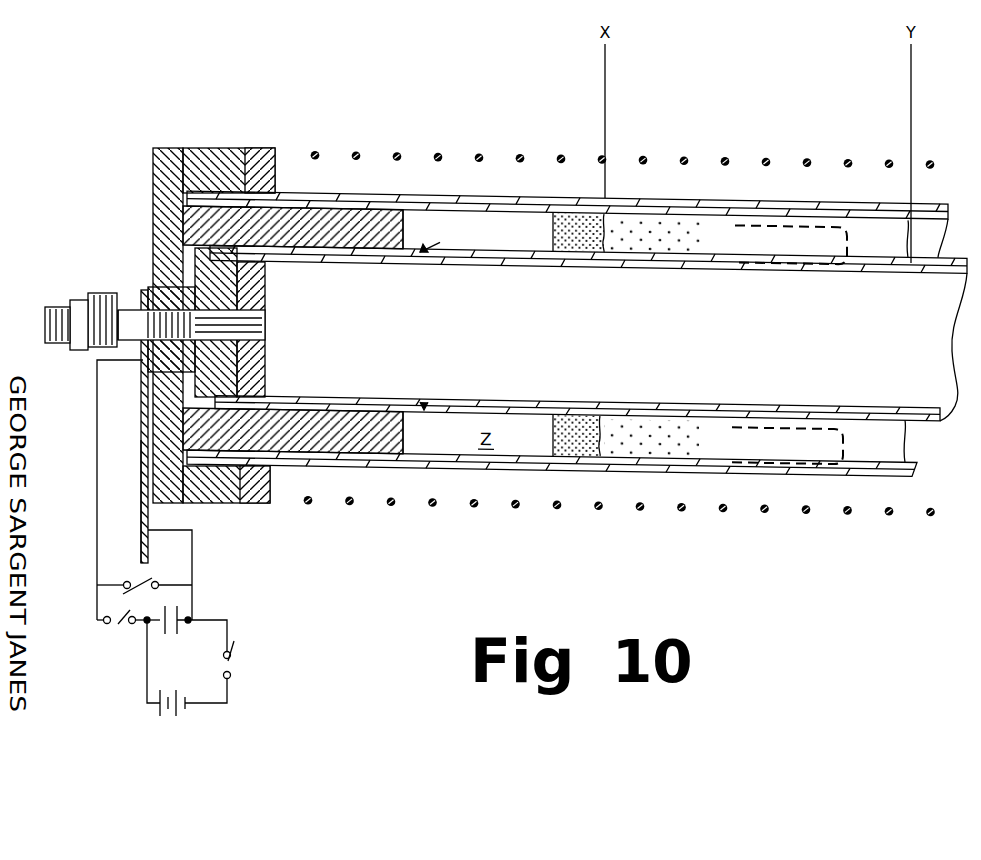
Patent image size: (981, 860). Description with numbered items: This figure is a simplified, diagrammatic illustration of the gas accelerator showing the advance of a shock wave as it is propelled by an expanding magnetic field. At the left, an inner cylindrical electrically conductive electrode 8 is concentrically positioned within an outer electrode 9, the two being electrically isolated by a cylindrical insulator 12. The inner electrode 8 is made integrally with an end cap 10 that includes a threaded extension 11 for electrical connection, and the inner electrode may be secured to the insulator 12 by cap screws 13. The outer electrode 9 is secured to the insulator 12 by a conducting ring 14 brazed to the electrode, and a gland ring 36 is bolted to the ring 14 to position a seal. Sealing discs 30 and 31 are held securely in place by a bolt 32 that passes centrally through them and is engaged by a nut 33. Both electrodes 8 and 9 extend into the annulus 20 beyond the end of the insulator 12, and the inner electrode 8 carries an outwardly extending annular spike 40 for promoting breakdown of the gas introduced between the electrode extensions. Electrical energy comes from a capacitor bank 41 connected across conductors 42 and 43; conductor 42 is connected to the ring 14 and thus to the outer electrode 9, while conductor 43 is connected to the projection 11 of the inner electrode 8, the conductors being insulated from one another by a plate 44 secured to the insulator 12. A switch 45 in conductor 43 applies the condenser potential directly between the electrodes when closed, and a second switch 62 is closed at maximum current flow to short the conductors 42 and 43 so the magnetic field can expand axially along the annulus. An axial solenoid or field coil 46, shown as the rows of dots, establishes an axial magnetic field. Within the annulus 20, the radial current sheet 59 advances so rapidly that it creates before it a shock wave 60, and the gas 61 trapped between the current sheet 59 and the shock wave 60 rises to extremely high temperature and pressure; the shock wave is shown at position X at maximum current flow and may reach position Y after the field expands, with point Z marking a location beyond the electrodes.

The inner cylindrical electrically conductive electrode 8 is at (410, 248).
The outer electrode 9 is at (418, 208).
The end cap 10 is at (165, 348).
The threaded extension 11 is at (100, 300).
The cylindrical insulator 12 is at (153, 230).
The cap screws 13 is at (143, 370).
The conducting ring 14 is at (228, 503).
The annulus 20 is at (710, 239).
The disc 30 is at (238, 360).
The disc 31 is at (256, 386).
The bolt 32 is at (290, 326).
The nut 33 is at (60, 345).
The gland ring 36 is at (255, 150).
The annular spike 40 is at (441, 320).
The capacitor bank 41 is at (178, 630).
The conductor 42 is at (194, 534).
The conductor 43 is at (97, 380).
The plate 44 is at (143, 463).
The switch 45 is at (120, 620).
The axial solenoid or field coil 46 is at (390, 506).
The radial current sheet 59 is at (553, 234).
The shock wave 60 is at (605, 234).
The gas 61 is at (583, 214).
The switch 62 is at (148, 585).